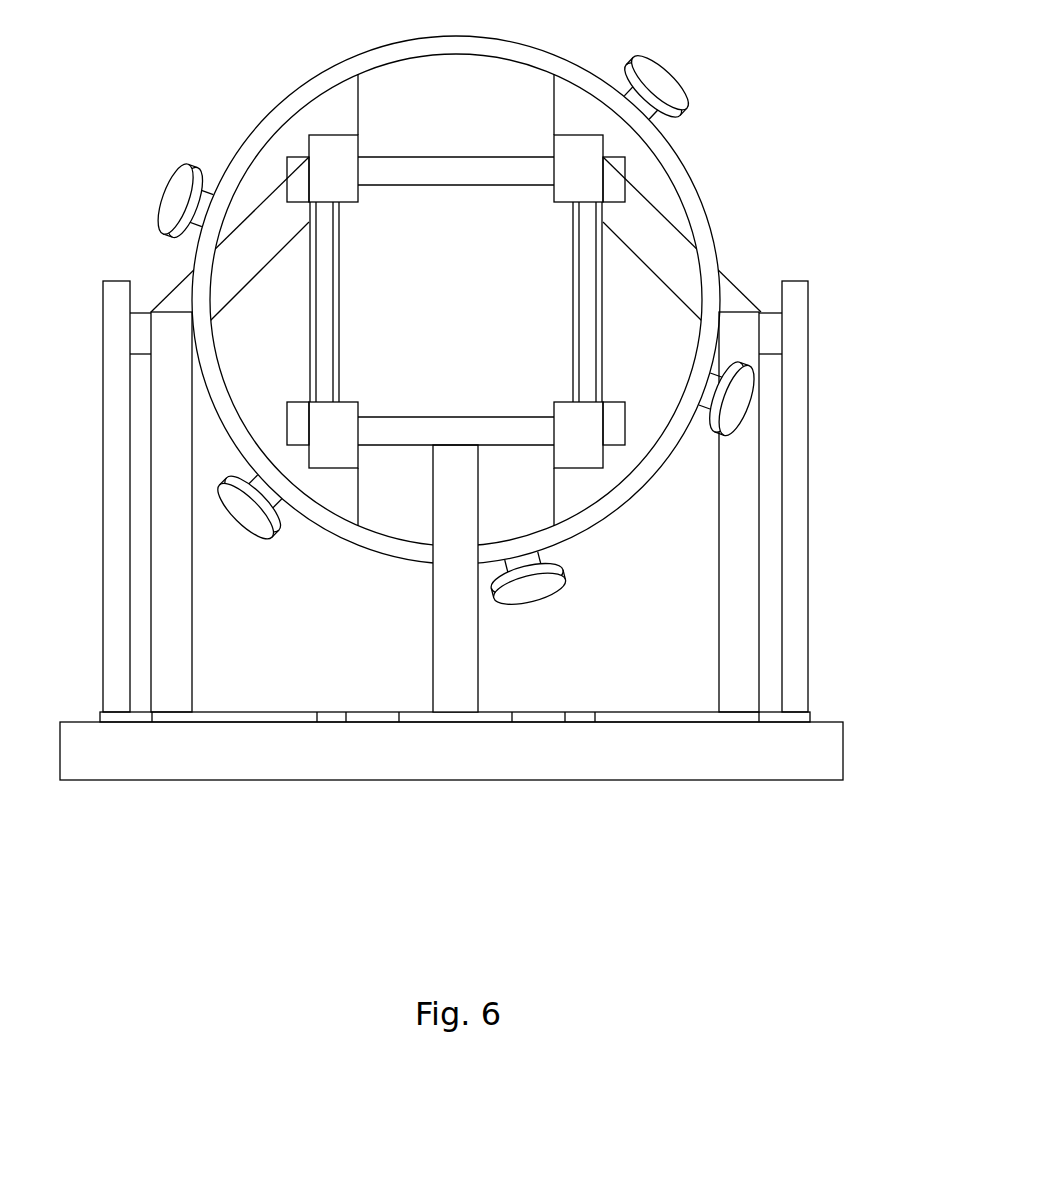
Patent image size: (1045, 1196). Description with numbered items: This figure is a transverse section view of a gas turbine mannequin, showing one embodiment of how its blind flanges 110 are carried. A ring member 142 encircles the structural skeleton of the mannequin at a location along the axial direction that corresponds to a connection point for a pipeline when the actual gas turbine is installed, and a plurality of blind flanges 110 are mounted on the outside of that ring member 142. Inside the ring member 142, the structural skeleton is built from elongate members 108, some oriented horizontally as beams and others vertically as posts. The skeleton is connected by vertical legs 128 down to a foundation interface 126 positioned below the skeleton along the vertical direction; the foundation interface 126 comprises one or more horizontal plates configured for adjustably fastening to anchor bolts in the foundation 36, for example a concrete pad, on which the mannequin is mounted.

The foundation 36 is at (825, 748).
The elongate members 108 is at (410, 177).
The blind flanges 110 is at (665, 82).
The foundation interface 126 is at (695, 715).
The vertical legs 128 is at (120, 648).
The ring member 142 is at (698, 218).